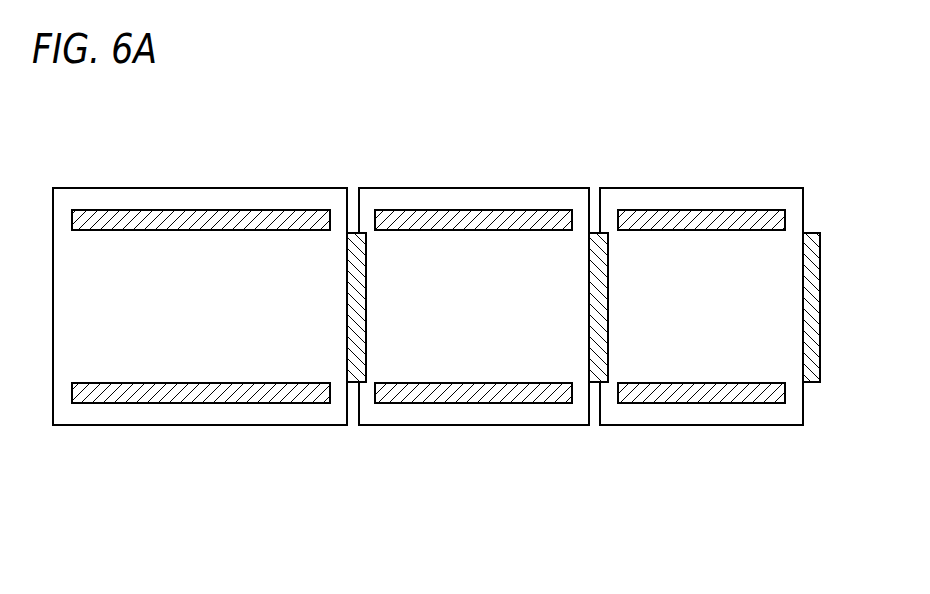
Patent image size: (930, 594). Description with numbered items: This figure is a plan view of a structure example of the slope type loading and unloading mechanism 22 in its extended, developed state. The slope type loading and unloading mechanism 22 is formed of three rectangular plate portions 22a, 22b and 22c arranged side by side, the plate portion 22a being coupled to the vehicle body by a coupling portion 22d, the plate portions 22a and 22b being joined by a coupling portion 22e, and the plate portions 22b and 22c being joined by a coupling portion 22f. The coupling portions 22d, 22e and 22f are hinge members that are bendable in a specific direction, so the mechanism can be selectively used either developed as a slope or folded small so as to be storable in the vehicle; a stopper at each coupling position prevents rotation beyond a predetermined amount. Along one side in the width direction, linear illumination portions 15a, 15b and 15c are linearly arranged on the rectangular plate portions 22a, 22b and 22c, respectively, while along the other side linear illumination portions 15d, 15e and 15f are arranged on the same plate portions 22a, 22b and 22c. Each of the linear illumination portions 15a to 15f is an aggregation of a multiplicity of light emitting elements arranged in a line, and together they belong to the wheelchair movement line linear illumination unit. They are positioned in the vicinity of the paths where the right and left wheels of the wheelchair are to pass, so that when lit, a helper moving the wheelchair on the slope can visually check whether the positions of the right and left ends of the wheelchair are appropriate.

The slope type loading and unloading mechanism 22 is at (648, 105).
The rectangular plate portion 22a is at (753, 425).
The rectangular plate portion 22b is at (533, 425).
The rectangular plate portion 22c is at (287, 425).
The coupling portion 22d is at (805, 233).
The coupling portion 22e is at (589, 238).
The coupling portion 22f is at (346, 238).
The linear illumination portion 15a is at (701, 210).
The linear illumination portion 15b is at (473, 210).
The linear illumination portion 15c is at (210, 210).
The linear illumination portion 15d is at (700, 403).
The linear illumination portion 15e is at (472, 403).
The linear illumination portion 15f is at (195, 403).